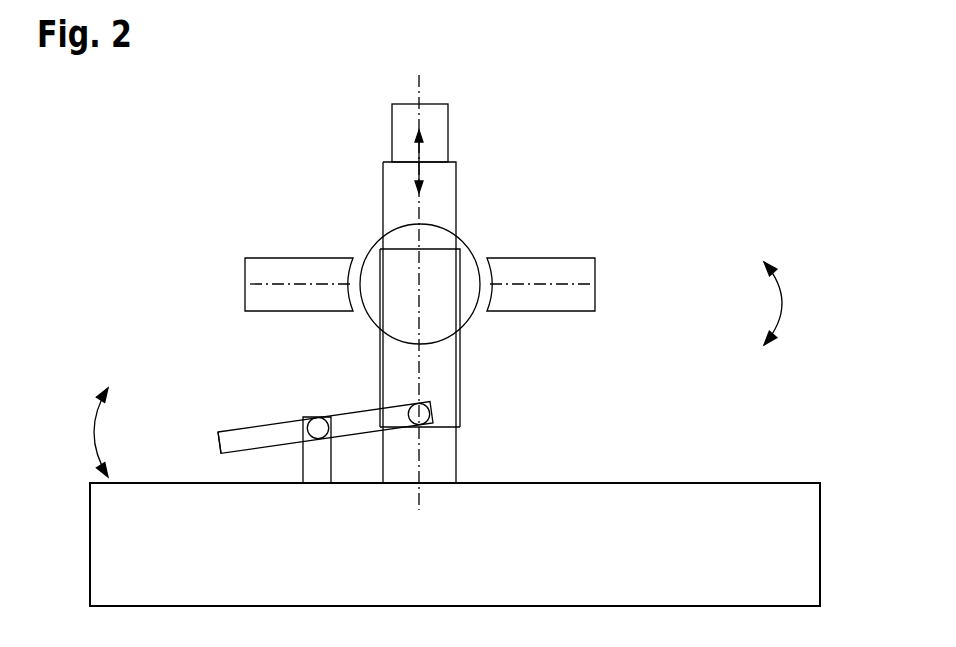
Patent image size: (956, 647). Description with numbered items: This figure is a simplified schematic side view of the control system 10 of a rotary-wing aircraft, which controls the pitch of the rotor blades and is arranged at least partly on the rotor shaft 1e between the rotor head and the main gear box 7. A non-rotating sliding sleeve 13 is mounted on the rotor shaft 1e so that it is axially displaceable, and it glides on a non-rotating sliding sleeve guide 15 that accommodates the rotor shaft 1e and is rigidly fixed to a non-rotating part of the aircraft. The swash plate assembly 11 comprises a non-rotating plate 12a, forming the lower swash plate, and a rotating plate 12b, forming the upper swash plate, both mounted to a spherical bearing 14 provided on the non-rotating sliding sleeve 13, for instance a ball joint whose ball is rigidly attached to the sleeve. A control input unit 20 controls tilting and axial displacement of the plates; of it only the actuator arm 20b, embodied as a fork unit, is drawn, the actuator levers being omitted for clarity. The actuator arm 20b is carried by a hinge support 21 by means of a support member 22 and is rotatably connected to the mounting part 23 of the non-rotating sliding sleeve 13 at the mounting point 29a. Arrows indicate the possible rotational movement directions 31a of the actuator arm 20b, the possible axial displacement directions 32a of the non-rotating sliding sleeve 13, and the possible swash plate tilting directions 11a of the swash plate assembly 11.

The main gear box 7 is at (663, 500).
The control system 10 is at (288, 158).
The swash plate assembly 11 is at (240, 253).
The swash plate tilting directions 11a is at (783, 300).
The non-rotating plate 12a is at (577, 262).
The rotating plate 12b is at (275, 257).
The non-rotating sliding sleeve 13 is at (447, 355).
The spherical bearing 14 is at (473, 238).
The non-rotating sliding sleeve guide 15 is at (400, 197).
The rotor shaft 1e is at (437, 122).
The axial displacement directions 32a is at (403, 150).
The mounting part 23 is at (447, 411).
The control input unit 20 is at (212, 412).
The actuator arm 20b is at (220, 440).
The hinge support 21 is at (295, 455).
The support member 22 is at (314, 418).
The mounting point 29a is at (412, 407).
The rotational movement directions 31a is at (90, 431).